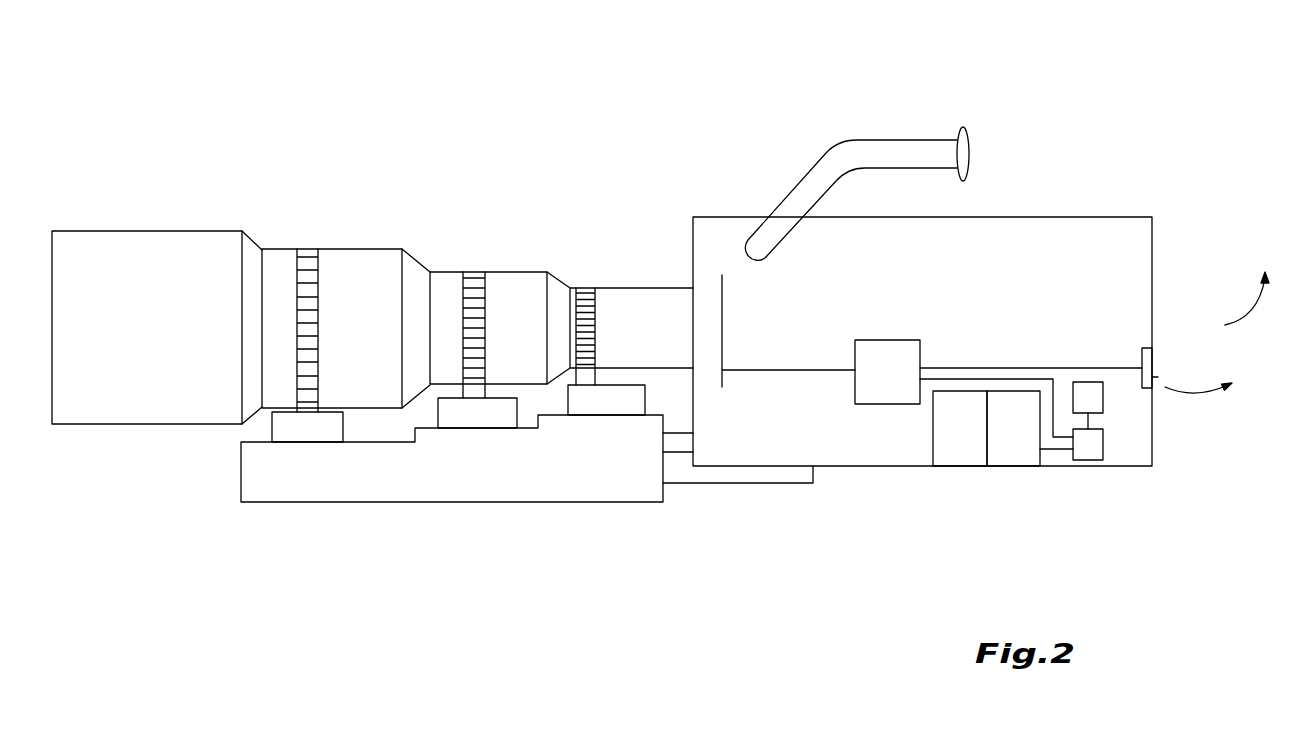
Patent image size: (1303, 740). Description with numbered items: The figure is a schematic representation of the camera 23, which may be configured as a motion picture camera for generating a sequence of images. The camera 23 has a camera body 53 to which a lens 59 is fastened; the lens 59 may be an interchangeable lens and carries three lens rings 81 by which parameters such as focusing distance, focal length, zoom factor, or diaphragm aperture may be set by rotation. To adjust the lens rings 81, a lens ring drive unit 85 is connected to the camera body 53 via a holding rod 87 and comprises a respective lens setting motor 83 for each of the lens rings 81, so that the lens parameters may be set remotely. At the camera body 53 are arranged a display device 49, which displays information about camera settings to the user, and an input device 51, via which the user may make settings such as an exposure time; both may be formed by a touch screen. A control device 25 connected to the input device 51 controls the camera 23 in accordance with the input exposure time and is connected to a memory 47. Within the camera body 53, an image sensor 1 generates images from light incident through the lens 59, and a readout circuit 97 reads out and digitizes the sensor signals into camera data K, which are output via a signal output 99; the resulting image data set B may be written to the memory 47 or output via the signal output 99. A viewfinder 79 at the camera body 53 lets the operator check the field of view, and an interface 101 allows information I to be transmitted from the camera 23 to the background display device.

The image sensor 1 is at (722, 338).
The camera 23 is at (988, 295).
The control device 25 is at (1095, 445).
The memory 47 is at (1095, 400).
The display device 49 is at (962, 447).
The input device 51 is at (1022, 447).
The camera body 53 is at (1065, 240).
The lens 59 is at (472, 207).
The viewfinder 79 is at (894, 147).
The lens rings 81 is at (312, 247).
The lens setting motor 83 is at (310, 430).
The lens ring drive unit 85 is at (390, 473).
The holding rod 87 is at (677, 453).
The readout circuit 97 is at (998, 388).
The signal output 99 is at (1155, 377).
The interface 101 is at (1148, 358).